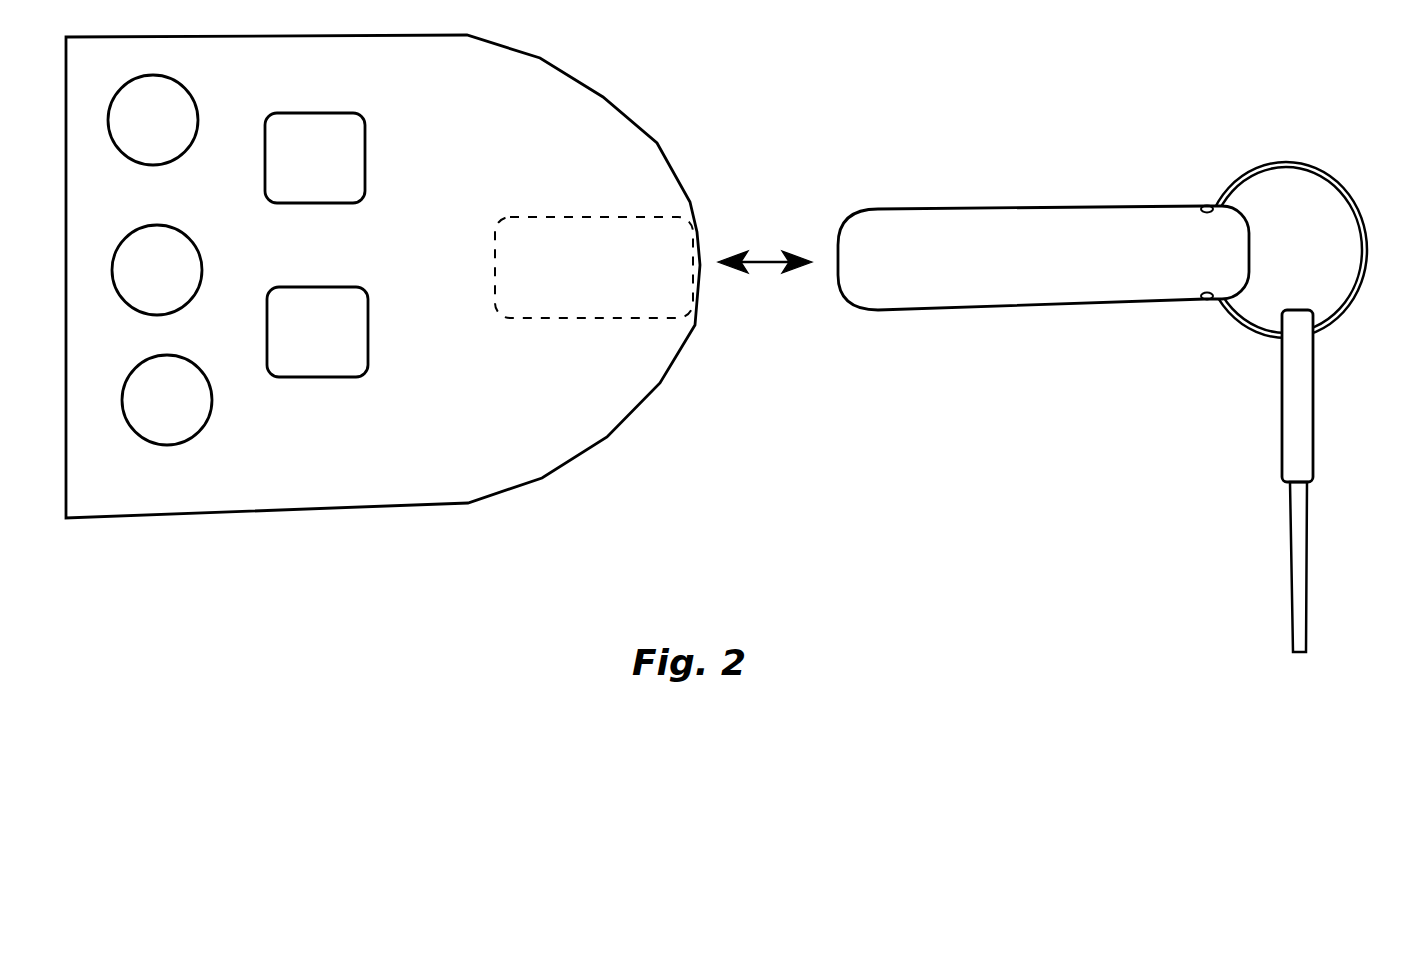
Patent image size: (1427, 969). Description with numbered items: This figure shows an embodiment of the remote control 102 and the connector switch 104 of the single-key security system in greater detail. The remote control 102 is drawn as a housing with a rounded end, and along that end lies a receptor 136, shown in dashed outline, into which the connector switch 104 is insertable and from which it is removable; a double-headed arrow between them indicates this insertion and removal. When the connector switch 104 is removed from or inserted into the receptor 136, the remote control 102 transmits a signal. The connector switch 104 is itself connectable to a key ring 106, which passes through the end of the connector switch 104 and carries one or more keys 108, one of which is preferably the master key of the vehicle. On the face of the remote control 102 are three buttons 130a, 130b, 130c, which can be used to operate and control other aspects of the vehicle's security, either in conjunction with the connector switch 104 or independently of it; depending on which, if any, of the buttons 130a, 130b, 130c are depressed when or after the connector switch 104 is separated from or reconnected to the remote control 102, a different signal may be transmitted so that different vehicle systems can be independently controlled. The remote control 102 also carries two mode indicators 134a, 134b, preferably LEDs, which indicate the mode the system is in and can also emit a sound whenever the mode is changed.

The remote control 102 is at (383, 276).
The connector switch 104 is at (1043, 258).
The key ring 106 is at (1275, 160).
The key 108 is at (1317, 400).
The button 130a is at (153, 120).
The button 130b is at (157, 270).
The button 130c is at (167, 400).
The mode indicator 134a is at (315, 158).
The mode indicator 134b is at (317, 332).
The receptor 136 is at (594, 267).